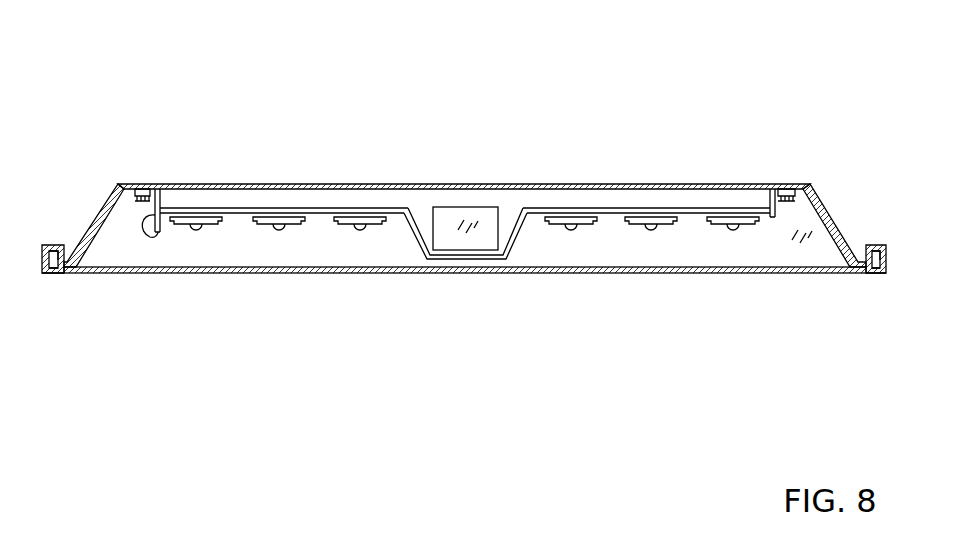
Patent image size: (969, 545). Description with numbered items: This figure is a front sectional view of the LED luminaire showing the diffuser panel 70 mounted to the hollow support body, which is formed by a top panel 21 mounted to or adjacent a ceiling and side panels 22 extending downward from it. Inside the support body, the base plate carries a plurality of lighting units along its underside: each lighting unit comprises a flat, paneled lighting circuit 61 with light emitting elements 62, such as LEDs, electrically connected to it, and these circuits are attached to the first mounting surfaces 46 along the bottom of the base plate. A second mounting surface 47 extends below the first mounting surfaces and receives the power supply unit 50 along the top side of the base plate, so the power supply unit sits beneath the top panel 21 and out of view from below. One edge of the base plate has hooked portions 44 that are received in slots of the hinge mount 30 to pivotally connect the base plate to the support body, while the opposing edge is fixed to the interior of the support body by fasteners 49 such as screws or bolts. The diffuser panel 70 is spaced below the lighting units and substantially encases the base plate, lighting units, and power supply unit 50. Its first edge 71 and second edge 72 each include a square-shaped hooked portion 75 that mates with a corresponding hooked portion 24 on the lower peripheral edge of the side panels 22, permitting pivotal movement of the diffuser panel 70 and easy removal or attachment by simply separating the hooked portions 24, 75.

The top panel 21 is at (588, 185).
The side panels 22 is at (88, 207).
The hooked portion 24 is at (52, 275).
The hinge mount 30 is at (172, 184).
The hooked portions 44 is at (140, 233).
The first mounting surfaces 46 is at (612, 215).
The second mounting surface 47 is at (517, 218).
The fasteners 49 is at (783, 218).
The power supply unit 50 is at (455, 207).
The lighting circuit 61 is at (253, 218).
The light emitting elements 62 is at (280, 225).
The diffuser panel 70 is at (380, 272).
The first edge 71 is at (873, 277).
The second edge 72 is at (58, 270).
The hooked portion 75 is at (57, 244).